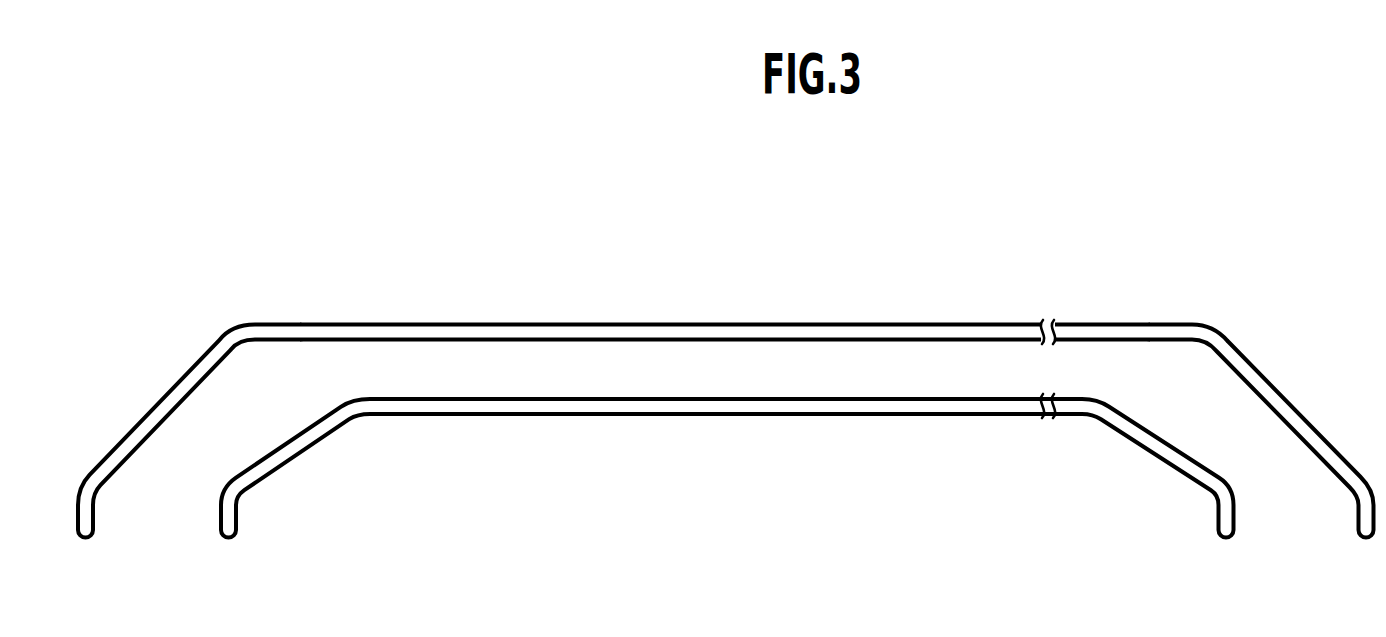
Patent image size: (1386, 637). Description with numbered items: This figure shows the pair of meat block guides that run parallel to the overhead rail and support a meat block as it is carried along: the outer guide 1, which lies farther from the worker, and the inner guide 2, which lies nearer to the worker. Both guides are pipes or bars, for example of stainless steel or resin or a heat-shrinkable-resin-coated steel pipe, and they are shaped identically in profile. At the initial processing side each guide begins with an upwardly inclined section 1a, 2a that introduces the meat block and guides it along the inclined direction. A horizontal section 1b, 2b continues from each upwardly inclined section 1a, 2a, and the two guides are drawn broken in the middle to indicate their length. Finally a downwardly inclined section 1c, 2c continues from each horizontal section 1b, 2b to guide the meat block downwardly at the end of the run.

The outer guide 1 is at (726, 366).
The upwardly inclined section of the outer guide 1a is at (170, 387).
The horizontal section of the outer guide 1b is at (692, 322).
The downwardly inclined section of the outer guide 1c is at (1290, 393).
The inner guide 2 is at (728, 456).
The upwardly inclined section of the inner guide 2a is at (287, 440).
The horizontal section of the inner guide 2b is at (700, 418).
The downwardly inclined section of the inner guide 2c is at (1167, 453).